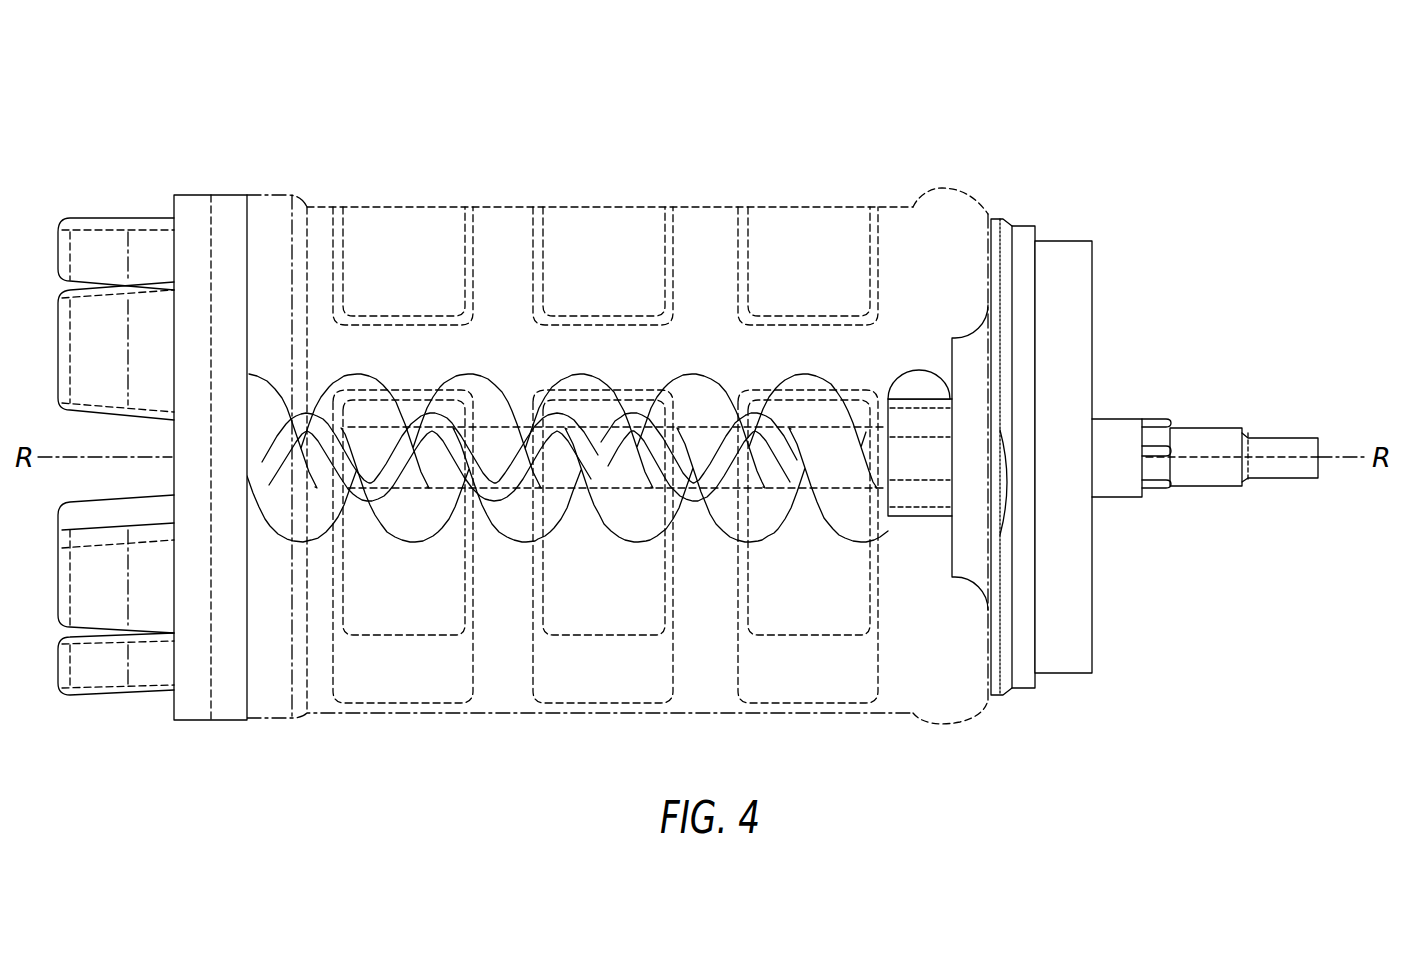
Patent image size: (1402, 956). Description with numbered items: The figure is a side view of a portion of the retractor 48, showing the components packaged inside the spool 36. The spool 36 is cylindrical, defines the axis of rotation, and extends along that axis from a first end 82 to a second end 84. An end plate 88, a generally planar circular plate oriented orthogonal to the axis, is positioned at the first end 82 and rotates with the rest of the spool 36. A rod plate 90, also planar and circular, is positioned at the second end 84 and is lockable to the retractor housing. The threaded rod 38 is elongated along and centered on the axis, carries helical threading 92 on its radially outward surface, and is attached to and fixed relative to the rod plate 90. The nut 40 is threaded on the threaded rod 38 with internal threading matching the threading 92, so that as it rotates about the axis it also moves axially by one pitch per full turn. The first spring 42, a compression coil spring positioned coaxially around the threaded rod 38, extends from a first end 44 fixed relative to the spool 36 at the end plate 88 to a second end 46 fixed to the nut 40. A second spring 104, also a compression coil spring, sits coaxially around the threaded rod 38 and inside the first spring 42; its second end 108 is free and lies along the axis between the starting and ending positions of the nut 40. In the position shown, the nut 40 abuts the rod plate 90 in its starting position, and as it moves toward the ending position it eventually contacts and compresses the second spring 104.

The spool 36 is at (600, 206).
The threaded rod 38 is at (800, 492).
The nut 40 is at (913, 518).
The first spring 42 is at (486, 375).
The first end 44 is at (257, 373).
The second end 46 is at (925, 371).
The retractor 48 is at (275, 83).
The first end 82 is at (273, 193).
The second end 84 is at (955, 187).
The end plate 88 is at (193, 194).
The rod plate 90 is at (1023, 224).
The threading 92 is at (785, 443).
The second spring 104 is at (587, 520).
The second end 108 is at (772, 490).